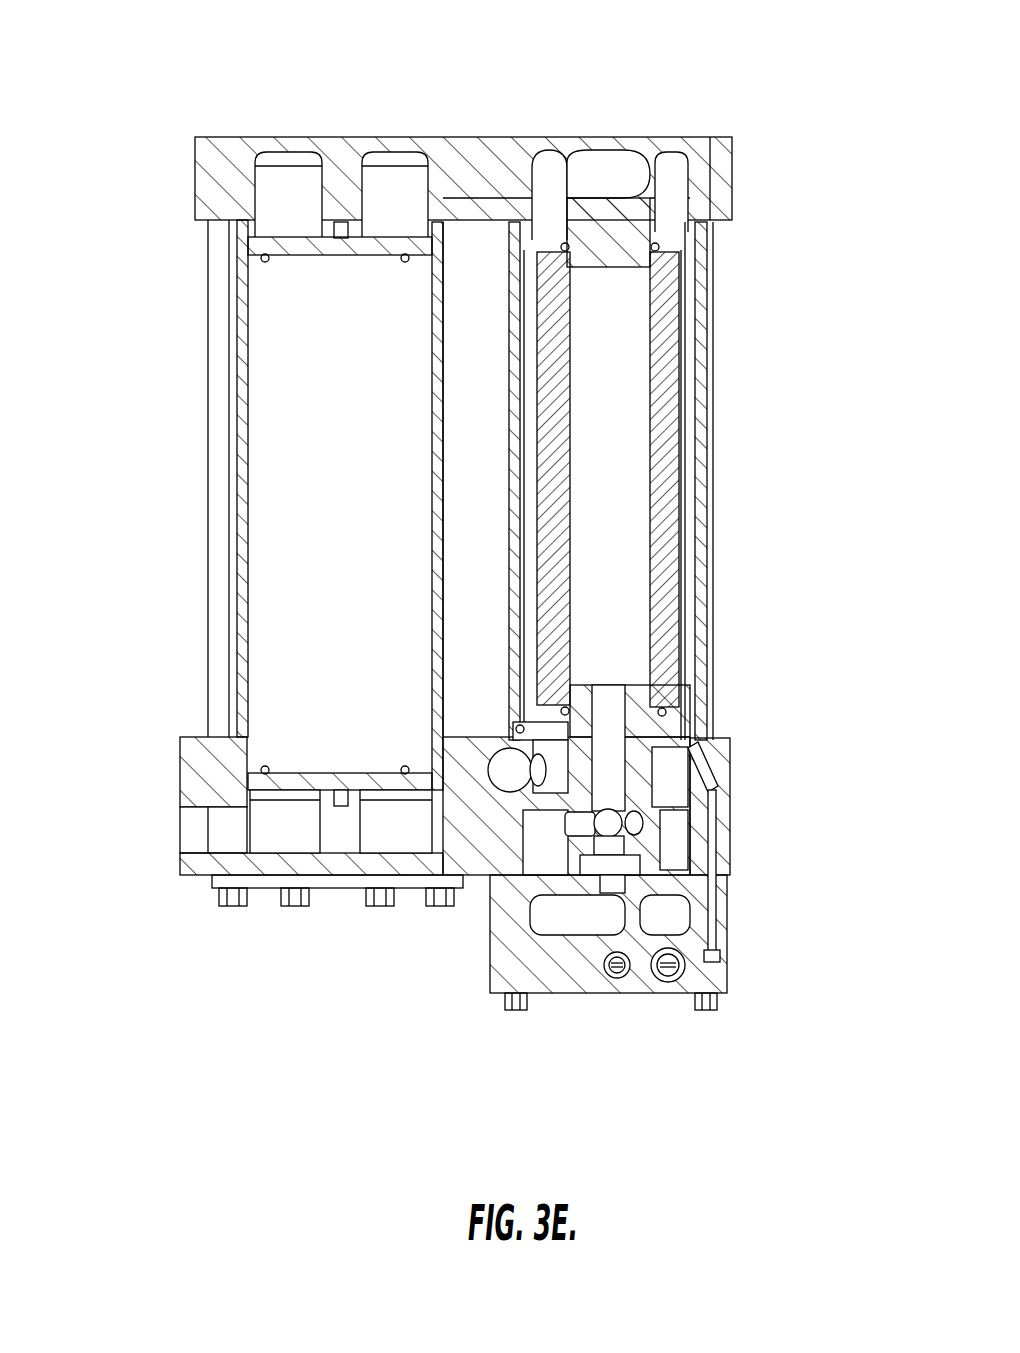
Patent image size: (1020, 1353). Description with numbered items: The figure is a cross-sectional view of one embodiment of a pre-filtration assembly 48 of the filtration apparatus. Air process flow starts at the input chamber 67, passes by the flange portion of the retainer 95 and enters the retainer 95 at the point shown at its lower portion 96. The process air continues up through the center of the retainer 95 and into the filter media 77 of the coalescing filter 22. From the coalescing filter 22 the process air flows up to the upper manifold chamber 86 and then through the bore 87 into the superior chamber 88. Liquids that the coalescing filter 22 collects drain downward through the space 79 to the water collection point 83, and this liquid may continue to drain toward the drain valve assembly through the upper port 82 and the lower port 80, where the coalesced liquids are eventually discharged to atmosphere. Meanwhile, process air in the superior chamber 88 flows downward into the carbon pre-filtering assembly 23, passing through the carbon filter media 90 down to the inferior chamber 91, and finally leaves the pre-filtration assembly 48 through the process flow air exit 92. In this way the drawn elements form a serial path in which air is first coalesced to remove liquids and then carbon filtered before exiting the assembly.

The pre-filtration assembly 48 is at (856, 126).
The superior chamber 88 is at (386, 182).
The bore 87 is at (527, 169).
The upper manifold chamber 86 is at (552, 181).
The carbon pre-filtering assembly 23 is at (188, 310).
The carbon filter media 90 is at (296, 444).
The coalescing filter 22 is at (711, 387).
The filter media 77 is at (573, 472).
The space 79 is at (533, 506).
The water collection point 83 is at (691, 739).
The upper port 82 is at (711, 747).
The lower port 80 is at (725, 909).
The process flow air exit 92 is at (177, 815).
The inferior chamber 91 is at (271, 811).
The input chamber 67 is at (529, 779).
The retainer 95 is at (527, 815).
The lower portion of the retainer 96 is at (571, 834).